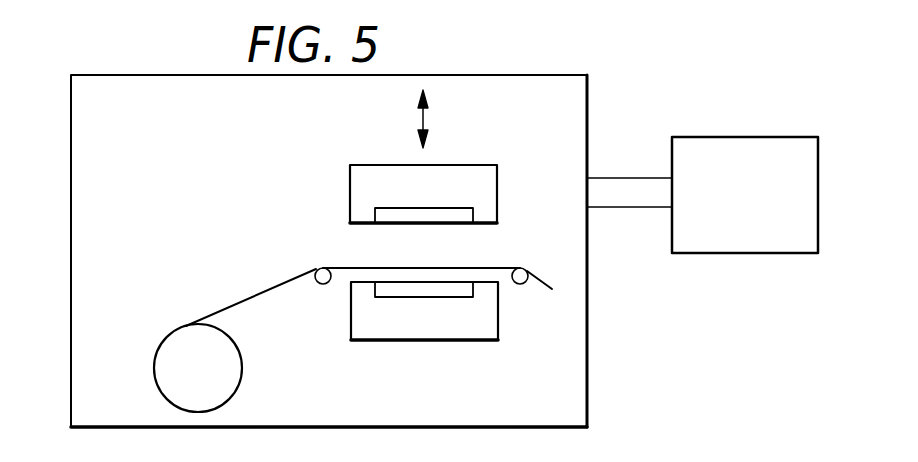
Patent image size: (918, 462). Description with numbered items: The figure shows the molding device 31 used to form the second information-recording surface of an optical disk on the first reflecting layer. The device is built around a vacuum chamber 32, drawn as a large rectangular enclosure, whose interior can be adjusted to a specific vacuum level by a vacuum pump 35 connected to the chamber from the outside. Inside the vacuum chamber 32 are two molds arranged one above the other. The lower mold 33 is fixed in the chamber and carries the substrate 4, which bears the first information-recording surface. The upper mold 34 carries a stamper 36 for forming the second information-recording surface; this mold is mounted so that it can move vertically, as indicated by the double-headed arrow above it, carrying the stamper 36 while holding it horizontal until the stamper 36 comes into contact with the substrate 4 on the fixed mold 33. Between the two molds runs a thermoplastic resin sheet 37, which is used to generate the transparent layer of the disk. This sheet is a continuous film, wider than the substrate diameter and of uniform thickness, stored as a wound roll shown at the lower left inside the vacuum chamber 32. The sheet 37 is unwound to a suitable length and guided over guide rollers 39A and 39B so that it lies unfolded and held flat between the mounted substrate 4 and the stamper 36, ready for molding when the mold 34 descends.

The molding device 31 is at (89, 31).
The vacuum chamber 32 is at (70, 198).
The mold 33 is at (477, 327).
The mold 34 is at (484, 191).
The vacuum pump 35 is at (704, 137).
The stamper 36 is at (396, 216).
The thermoplastic resin sheet 37 is at (238, 302).
The guide roller 39A is at (325, 286).
The guide roller 39B is at (517, 284).
The substrate 4 is at (417, 288).